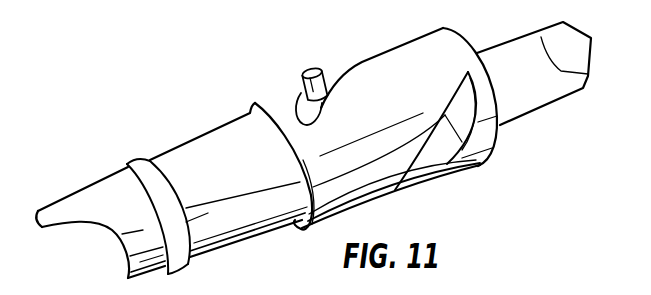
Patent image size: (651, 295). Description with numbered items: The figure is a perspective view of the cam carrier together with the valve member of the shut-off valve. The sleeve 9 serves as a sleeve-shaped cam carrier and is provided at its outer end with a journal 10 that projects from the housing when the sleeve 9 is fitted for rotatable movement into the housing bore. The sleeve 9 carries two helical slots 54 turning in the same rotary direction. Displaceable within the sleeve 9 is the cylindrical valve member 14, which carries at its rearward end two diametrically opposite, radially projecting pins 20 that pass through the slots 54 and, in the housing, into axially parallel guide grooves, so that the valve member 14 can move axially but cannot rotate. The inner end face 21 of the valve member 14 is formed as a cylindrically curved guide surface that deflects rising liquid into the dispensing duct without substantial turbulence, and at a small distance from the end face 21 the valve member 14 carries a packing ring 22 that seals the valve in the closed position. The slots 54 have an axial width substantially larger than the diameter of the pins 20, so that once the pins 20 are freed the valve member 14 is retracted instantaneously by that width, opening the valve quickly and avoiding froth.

The sleeve 9 is at (384, 65).
The journal 10 is at (514, 52).
The valve member 14 is at (200, 150).
The pins 20 is at (306, 87).
The inner end face 21 is at (100, 243).
The packing ring 22 is at (130, 170).
The helical slots 54 is at (308, 112).